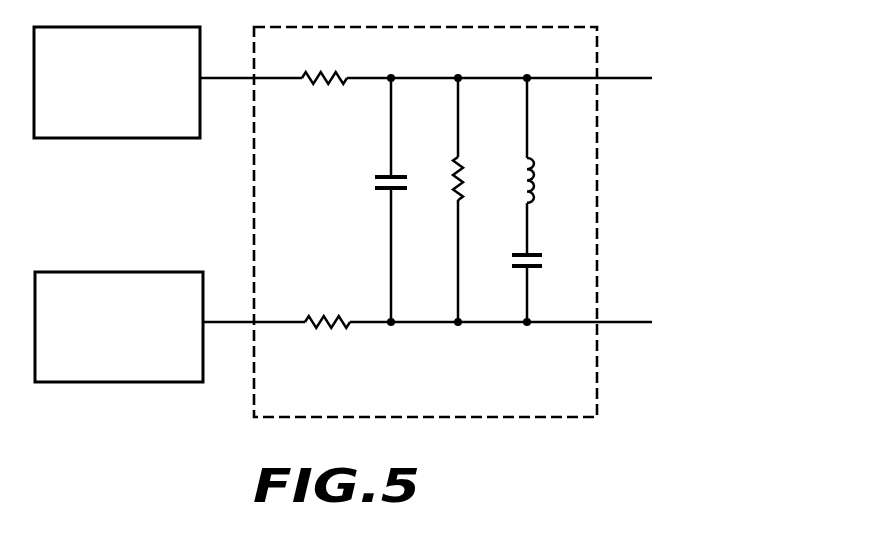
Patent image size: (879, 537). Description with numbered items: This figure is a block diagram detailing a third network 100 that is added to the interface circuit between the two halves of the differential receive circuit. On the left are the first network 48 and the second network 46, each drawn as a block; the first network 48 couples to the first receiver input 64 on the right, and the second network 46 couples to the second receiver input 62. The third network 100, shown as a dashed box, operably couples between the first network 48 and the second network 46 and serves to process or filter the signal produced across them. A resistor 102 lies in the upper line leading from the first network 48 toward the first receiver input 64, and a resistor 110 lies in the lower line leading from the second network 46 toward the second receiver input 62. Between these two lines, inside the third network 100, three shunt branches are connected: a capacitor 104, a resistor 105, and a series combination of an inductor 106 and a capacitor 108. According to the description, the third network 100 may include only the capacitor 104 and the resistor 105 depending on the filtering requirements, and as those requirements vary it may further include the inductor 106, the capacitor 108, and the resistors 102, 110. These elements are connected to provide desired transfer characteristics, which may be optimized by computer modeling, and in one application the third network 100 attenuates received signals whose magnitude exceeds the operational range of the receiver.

The first network 48 is at (185, 128).
The second network 46 is at (185, 370).
The third network 100 is at (588, 402).
The first receiver input 64 is at (484, 76).
The second receiver input 62 is at (485, 318).
The resistor 102 is at (329, 90).
The resistor 110 is at (330, 333).
The capacitor 104 is at (380, 175).
The resistor 105 is at (456, 166).
The inductor 106 is at (538, 163).
The capacitor 108 is at (537, 255).